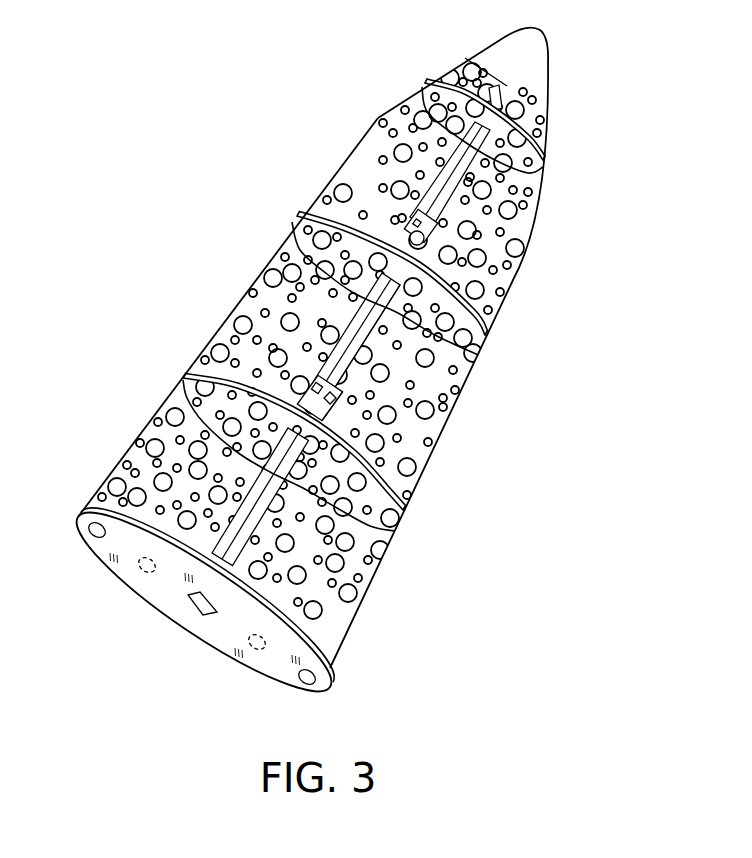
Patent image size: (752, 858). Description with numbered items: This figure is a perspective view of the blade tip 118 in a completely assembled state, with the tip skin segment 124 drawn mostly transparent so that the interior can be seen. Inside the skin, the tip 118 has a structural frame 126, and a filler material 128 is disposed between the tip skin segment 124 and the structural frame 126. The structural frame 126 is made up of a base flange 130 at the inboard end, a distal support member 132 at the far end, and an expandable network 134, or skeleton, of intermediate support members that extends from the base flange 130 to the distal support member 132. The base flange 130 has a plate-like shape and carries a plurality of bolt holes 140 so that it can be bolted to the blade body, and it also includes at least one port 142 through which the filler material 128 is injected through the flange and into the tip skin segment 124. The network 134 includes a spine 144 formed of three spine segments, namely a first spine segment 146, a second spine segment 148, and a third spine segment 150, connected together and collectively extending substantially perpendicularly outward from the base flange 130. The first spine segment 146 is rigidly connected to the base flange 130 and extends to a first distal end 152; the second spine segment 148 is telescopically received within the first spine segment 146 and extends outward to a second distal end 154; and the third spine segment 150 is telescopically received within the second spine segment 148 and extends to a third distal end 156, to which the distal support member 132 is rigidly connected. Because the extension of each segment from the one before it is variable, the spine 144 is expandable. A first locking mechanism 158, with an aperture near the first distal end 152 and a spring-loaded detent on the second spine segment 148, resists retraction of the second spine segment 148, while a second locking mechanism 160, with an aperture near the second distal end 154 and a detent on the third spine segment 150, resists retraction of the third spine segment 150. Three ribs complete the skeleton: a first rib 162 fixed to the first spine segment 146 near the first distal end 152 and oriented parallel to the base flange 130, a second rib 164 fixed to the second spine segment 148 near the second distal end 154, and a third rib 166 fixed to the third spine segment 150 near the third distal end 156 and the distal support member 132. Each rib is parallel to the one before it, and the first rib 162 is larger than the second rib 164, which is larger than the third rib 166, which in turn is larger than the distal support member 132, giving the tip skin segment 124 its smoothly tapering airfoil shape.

The tip 118 is at (200, 44).
The tip skin segment 124 is at (352, 348).
The structural frame 126 is at (238, 470).
The filler material 128 is at (352, 607).
The base flange 130 is at (250, 602).
The distal support member 132 is at (530, 63).
The expandable network 134 is at (368, 317).
The bolt holes 140 is at (97, 540).
The port 142 is at (147, 573).
The spine 144 is at (380, 348).
The first spine segment 146 is at (278, 513).
The second spine segment 148 is at (362, 374).
The third spine segment 150 is at (438, 211).
The first distal end 152 is at (316, 379).
The second distal end 154 is at (416, 124).
The third distal end 156 is at (490, 68).
The first locking mechanism 158 is at (326, 361).
The second locking mechanism 160 is at (426, 242).
The first rib 162 is at (403, 505).
The second rib 164 is at (482, 318).
The third rib 166 is at (543, 130).